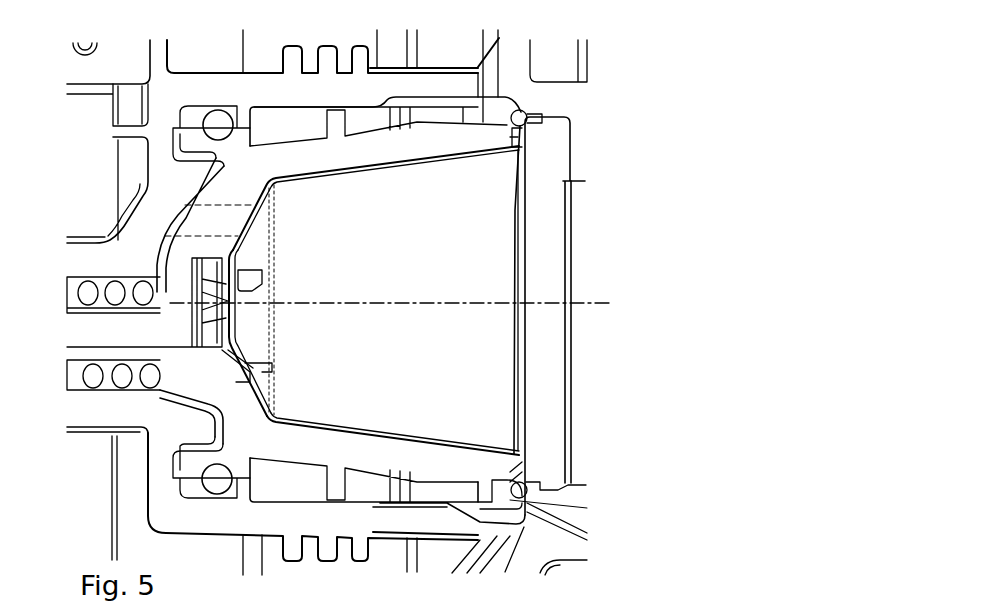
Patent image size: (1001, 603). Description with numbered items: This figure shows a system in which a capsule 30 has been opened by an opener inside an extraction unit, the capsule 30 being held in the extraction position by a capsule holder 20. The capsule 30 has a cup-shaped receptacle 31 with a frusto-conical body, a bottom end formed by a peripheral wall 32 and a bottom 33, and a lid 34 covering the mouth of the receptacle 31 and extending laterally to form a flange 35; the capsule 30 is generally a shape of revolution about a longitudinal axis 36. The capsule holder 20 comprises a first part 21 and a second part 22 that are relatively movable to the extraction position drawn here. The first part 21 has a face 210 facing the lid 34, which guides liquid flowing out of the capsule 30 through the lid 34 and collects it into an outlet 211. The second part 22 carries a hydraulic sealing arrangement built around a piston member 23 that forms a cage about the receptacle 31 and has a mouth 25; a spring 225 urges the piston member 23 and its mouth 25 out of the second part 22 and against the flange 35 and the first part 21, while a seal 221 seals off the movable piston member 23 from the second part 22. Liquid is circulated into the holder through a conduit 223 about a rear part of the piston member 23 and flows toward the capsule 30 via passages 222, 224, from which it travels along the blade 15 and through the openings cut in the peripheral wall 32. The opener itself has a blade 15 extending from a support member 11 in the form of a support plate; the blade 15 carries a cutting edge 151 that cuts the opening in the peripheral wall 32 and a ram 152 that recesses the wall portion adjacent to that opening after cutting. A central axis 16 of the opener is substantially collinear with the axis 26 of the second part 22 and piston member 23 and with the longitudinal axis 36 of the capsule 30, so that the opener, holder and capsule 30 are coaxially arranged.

The capsule holder 20 is at (647, 46).
The second part 22 is at (207, 83).
The seal 221 is at (216, 122).
The passage 222 is at (213, 415).
The conduit 223 is at (127, 283).
The passage 224 is at (212, 218).
The spring 225 is at (115, 290).
The support member 11 is at (195, 317).
The blade 15 is at (253, 277).
The cutting edge 151 is at (272, 366).
The ram 152 is at (243, 380).
The piston member 23 is at (337, 157).
The mouth 25 is at (516, 144).
The capsule 30 is at (391, 283).
The receptacle 31 is at (327, 432).
The peripheral wall 32 is at (250, 228).
The bottom 33 is at (228, 330).
The lid 34 is at (513, 338).
The flange 35 is at (524, 116).
The first part 21 is at (557, 160).
The face 210 is at (518, 368).
The outlet 211 is at (565, 513).
The central axis 16 is at (580, 302).
The axis 26 is at (610, 305).
The longitudinal axis 36 is at (593, 305).